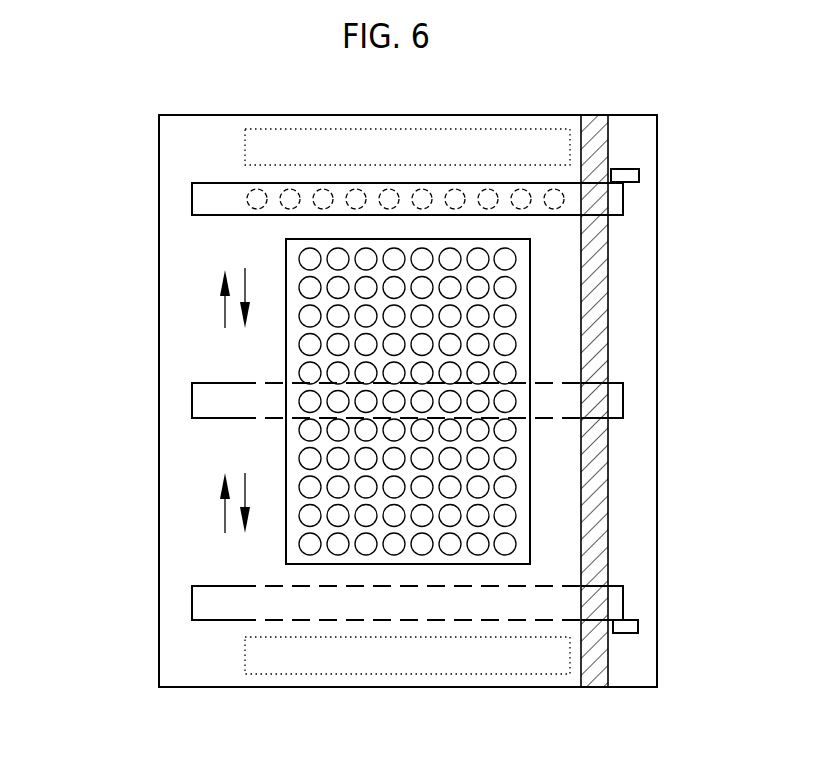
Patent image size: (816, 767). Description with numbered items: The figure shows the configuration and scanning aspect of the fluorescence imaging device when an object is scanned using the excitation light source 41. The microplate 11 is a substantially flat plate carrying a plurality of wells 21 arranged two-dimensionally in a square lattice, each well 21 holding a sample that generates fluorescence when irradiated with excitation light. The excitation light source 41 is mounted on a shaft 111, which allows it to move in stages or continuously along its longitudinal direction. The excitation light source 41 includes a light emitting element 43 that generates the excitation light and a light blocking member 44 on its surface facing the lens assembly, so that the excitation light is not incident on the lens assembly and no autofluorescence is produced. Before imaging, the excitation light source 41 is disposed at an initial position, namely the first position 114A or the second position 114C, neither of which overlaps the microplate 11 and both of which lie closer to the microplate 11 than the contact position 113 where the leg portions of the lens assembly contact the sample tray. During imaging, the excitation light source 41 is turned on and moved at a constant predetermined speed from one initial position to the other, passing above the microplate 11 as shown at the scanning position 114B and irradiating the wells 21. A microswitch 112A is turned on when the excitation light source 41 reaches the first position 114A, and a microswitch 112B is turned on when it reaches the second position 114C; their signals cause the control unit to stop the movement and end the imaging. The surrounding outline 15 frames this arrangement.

The housing 15 is at (159, 137).
The shaft 111 is at (600, 298).
The contact position 113 is at (398, 138).
The first position 114A is at (184, 199).
The scanning position 114B is at (184, 401).
The second position 114C is at (184, 603).
The light emitting element 43 is at (250, 199).
The excitation light source 41 is at (623, 199).
The light blocking member 44 is at (606, 203).
The microswitch 112A is at (634, 168).
The microswitch 112B is at (632, 633).
The microplate 11 is at (531, 340).
The well 21 is at (510, 311).